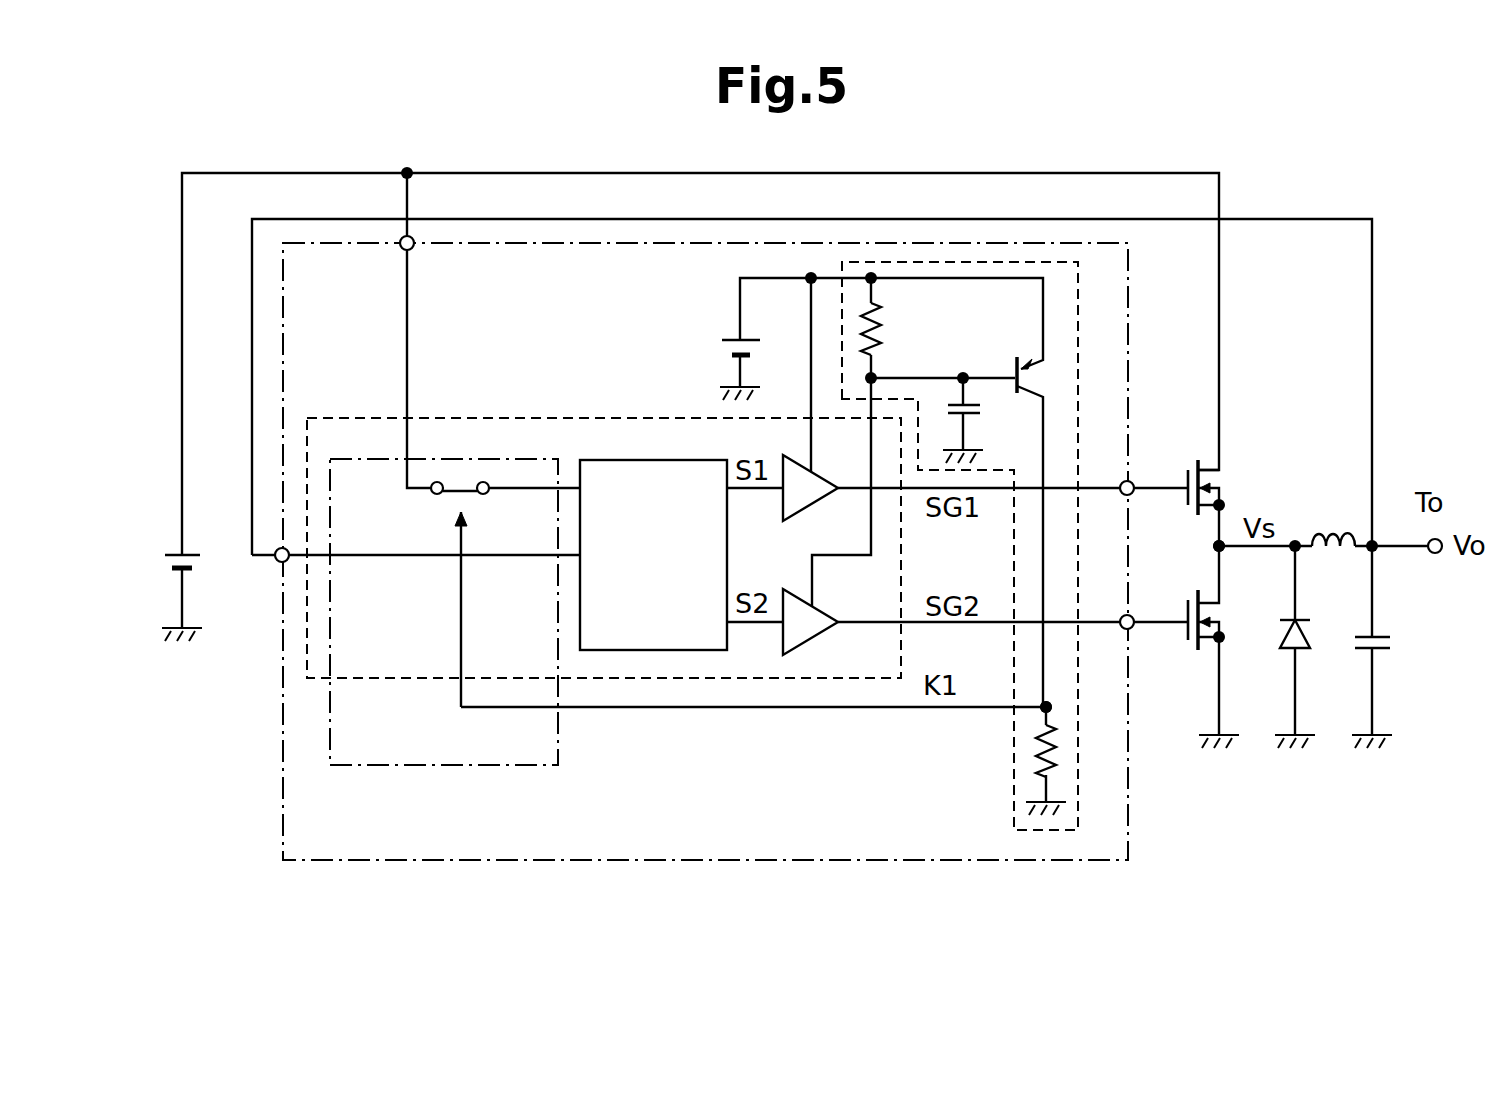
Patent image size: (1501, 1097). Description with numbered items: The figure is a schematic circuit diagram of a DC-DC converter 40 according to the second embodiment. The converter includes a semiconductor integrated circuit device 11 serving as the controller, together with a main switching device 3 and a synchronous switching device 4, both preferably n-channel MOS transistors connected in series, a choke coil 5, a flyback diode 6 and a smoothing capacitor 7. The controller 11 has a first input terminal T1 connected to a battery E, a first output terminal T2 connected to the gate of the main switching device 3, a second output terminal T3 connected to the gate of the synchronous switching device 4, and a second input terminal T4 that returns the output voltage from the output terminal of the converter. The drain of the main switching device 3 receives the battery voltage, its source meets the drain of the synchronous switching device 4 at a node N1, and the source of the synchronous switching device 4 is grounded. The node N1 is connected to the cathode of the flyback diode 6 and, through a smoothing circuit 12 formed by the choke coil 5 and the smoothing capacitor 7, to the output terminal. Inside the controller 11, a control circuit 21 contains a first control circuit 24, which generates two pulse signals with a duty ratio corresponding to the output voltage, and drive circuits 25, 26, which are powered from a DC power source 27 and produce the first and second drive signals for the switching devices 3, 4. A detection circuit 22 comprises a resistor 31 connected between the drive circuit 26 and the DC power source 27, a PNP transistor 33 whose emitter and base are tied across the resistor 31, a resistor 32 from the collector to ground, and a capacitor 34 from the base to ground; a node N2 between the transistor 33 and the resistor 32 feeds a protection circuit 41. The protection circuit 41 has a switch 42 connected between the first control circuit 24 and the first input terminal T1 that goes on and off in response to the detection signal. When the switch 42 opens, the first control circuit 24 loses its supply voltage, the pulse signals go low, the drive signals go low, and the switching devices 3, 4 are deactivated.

The DC-DC converter 40 is at (1402, 225).
The semiconductor integrated circuit device 11 is at (1128, 270).
The control circuit 21 is at (453, 416).
The detection circuit 22 is at (1080, 336).
The first control circuit 24 is at (697, 460).
The drive circuit 25 is at (824, 476).
The drive circuit 26 is at (830, 608).
The DC power source 27 is at (738, 340).
The resistor 31 is at (880, 322).
The resistor 32 is at (1037, 746).
The PNP transistor 33 is at (1018, 365).
The capacitor 34 is at (976, 418).
The protection circuit 41 is at (470, 767).
The switch 42 is at (436, 496).
The main switching device 3 is at (1186, 478).
The synchronous switching device 4 is at (1187, 608).
The choke coil 5 is at (1318, 534).
The flyback diode 6 is at (1286, 647).
The smoothing capacitor 7 is at (1384, 650).
The smoothing circuit 12 is at (1400, 608).
The first input terminal T1 is at (413, 249).
The first output terminal T2 is at (1130, 495).
The second output terminal T3 is at (1130, 629).
The second input terminal T4 is at (276, 561).
The battery E is at (170, 553).
The node N1 is at (1225, 549).
The node N2 is at (1052, 707).